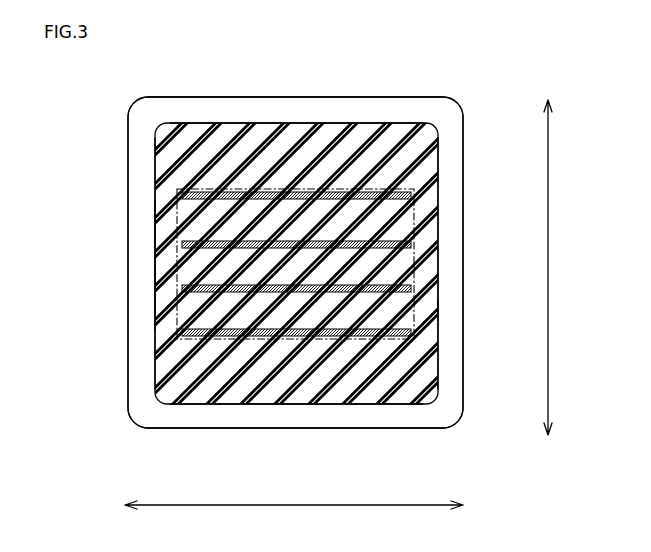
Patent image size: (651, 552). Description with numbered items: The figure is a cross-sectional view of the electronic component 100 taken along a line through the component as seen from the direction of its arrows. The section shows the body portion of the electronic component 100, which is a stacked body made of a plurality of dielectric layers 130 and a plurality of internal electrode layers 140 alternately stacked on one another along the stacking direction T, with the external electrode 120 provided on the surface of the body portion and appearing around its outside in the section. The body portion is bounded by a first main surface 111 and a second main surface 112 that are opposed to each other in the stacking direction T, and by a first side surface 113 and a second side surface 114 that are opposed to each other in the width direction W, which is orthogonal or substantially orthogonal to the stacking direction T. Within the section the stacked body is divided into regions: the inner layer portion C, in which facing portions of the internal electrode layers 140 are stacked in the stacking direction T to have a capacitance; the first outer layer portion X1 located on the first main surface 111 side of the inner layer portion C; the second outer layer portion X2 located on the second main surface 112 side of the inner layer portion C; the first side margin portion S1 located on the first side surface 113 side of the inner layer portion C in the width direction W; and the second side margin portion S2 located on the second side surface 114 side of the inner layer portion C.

The electronic component 100 is at (506, 104).
The first main surface 111 is at (407, 123).
The second main surface 112 is at (377, 404).
The first side surface 113 is at (438, 232).
The second side surface 114 is at (155, 204).
The external electrode 120 is at (440, 413).
The dielectric layers 130 is at (237, 128).
The internal electrode layers 140 is at (411, 196).
The first outer layer portion X1 is at (330, 146).
The second outer layer portion X2 is at (267, 375).
The first side margin portion S1 is at (417, 262).
The second side margin portion S2 is at (157, 285).
The inner layer portion C is at (435, 310).
The stacking direction T is at (558, 267).
The width direction W is at (294, 516).